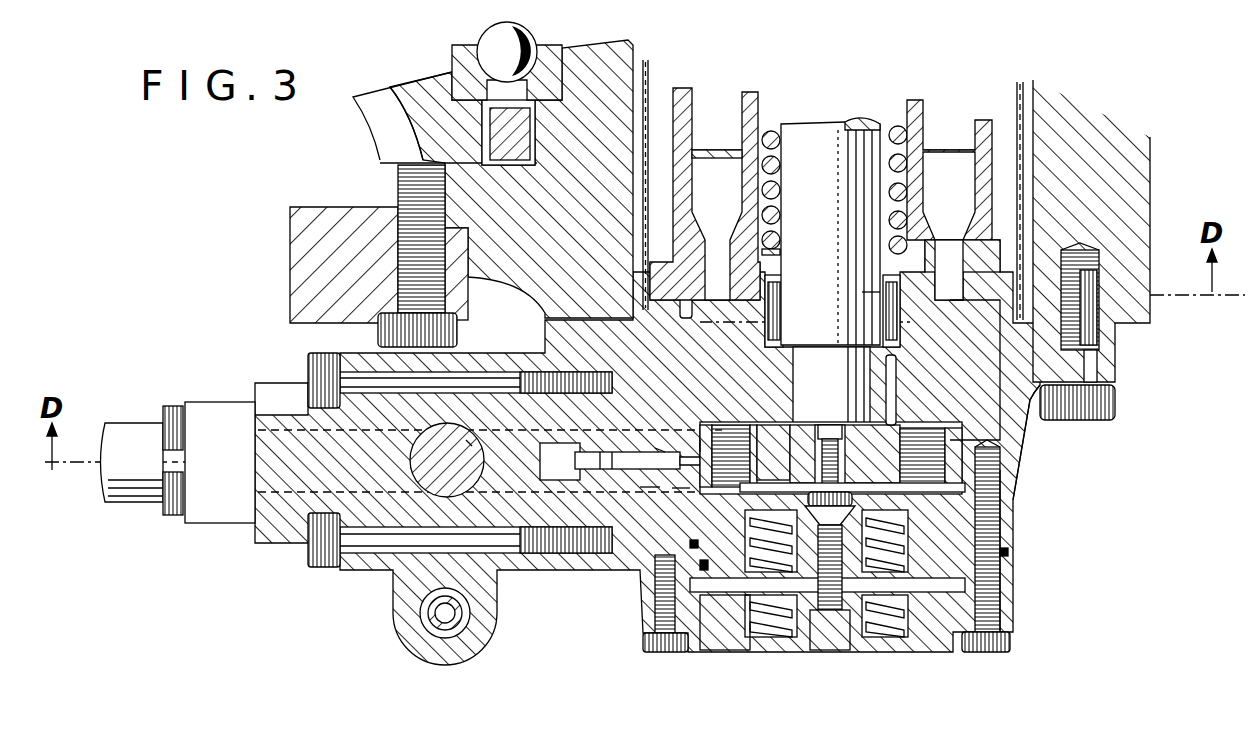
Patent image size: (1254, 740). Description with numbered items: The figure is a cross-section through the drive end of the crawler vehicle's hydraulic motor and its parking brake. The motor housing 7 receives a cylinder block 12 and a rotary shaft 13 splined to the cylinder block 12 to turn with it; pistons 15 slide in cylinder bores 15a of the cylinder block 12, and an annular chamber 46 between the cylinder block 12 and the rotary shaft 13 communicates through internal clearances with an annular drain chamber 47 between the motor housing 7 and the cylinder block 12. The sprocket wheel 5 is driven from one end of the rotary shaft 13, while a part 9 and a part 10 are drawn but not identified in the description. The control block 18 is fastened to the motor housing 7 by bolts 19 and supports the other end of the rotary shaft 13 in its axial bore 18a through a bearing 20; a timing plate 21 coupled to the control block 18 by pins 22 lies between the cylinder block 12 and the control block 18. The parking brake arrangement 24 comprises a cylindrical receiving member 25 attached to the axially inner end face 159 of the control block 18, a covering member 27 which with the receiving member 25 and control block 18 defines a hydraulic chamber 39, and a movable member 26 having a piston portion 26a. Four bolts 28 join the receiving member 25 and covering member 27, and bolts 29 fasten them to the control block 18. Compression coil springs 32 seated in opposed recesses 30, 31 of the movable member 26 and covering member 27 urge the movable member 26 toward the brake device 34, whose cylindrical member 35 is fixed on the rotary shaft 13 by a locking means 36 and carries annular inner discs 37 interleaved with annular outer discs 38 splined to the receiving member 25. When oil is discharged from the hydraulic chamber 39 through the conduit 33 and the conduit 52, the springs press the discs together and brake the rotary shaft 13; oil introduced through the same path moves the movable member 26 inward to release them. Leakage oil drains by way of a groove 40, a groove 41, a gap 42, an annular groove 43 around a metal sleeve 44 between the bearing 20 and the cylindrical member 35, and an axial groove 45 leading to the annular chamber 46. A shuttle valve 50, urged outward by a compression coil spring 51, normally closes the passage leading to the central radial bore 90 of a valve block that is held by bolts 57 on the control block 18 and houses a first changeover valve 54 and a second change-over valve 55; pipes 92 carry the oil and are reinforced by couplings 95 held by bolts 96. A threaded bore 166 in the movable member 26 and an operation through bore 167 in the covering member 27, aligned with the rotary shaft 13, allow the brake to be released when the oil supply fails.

The sprocket wheel 5 is at (412, 84).
The motor housing 7 is at (592, 62).
The mounting flange 9 is at (300, 226).
The stud bolt 10 is at (396, 196).
The cylinder block 12 is at (985, 122).
The rotary shaft 13 is at (808, 128).
The pistons 15 is at (722, 150).
The cylinder bores 15a is at (740, 200).
The control block 18 is at (1105, 360).
The axial bore 18a is at (862, 292).
The bolts 19 is at (1117, 405).
The bearing 20 is at (476, 47).
The timing plate 21 is at (996, 268).
The pins 22 is at (676, 284).
The parking brake arrangement 24 is at (935, 655).
The cylindrical receiving member 25 is at (1007, 537).
The movable member 26 is at (748, 600).
The piston portion 26a is at (968, 576).
The covering member 27 is at (750, 640).
The bolts 28 is at (656, 650).
The bolts 29 is at (1003, 654).
The recesses 30 is at (968, 580).
The recesses 31 is at (800, 612).
The compression coil springs 32 is at (870, 648).
The conduit 33 is at (640, 487).
The brake device 34 is at (954, 426).
The cylindrical member 35 is at (906, 426).
The locking means 36 is at (830, 432).
The annular inner discs 37 is at (924, 428).
The annular outer discs 38 is at (983, 445).
The hydraulic chamber 39 is at (696, 546).
The groove 40 is at (700, 440).
The groove 41 is at (715, 430).
The gap 42 is at (765, 430).
The annular groove 43 is at (770, 410).
The metal sleeve 44 is at (893, 382).
The axial groove 45 is at (762, 320).
The annular chamber 46 is at (770, 126).
The annular drain chamber 47 is at (650, 94).
The shuttle valve 50 is at (655, 448).
The compression coil spring 51 is at (692, 456).
The conduit 52 is at (672, 488).
The first changeover valve 54 is at (412, 479).
The second change-over valve 55 is at (410, 648).
The bolts 57 is at (310, 374).
The central radial bore 90 is at (466, 440).
The pipes 92 is at (112, 502).
The couplings 95 is at (222, 524).
The bolts 96 is at (172, 522).
The axially inner end face 159 is at (1026, 507).
The threaded bore 166 is at (722, 652).
The operation through bore 167 is at (840, 652).